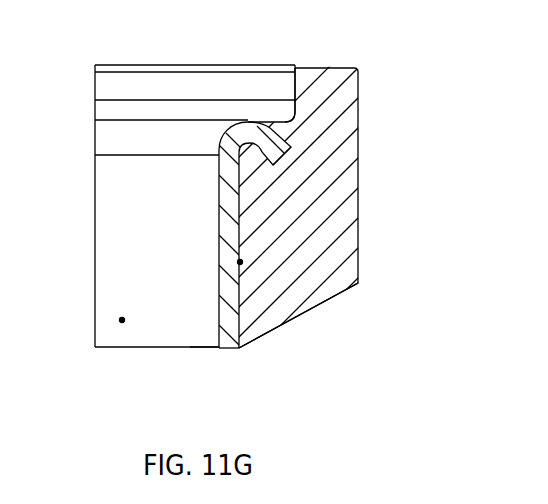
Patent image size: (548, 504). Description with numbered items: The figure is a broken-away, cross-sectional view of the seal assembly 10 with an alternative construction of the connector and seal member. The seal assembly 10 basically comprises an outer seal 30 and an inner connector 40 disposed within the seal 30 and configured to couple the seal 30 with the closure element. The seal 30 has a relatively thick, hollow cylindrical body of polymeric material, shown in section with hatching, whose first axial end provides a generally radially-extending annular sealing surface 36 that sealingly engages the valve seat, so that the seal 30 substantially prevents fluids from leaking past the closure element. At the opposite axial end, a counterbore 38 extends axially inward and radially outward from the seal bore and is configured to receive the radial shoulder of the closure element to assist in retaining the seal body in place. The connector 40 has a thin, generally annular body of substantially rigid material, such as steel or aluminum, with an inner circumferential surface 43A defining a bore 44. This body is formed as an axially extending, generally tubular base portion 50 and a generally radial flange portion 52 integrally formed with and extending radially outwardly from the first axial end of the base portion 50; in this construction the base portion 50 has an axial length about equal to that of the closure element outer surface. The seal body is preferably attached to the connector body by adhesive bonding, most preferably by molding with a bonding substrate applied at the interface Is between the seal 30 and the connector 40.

The seal assembly 10 is at (398, 108).
The seal 30 is at (387, 203).
The sealing surface 36 is at (297, 315).
The counterbore 38 is at (291, 86).
The connector 40 is at (195, 341).
The inner circumferential surface 43A is at (172, 318).
The bore 44 is at (122, 322).
The tubular base portion 50 is at (218, 245).
The radial flange portion 52 is at (252, 122).
The interface Is is at (240, 262).